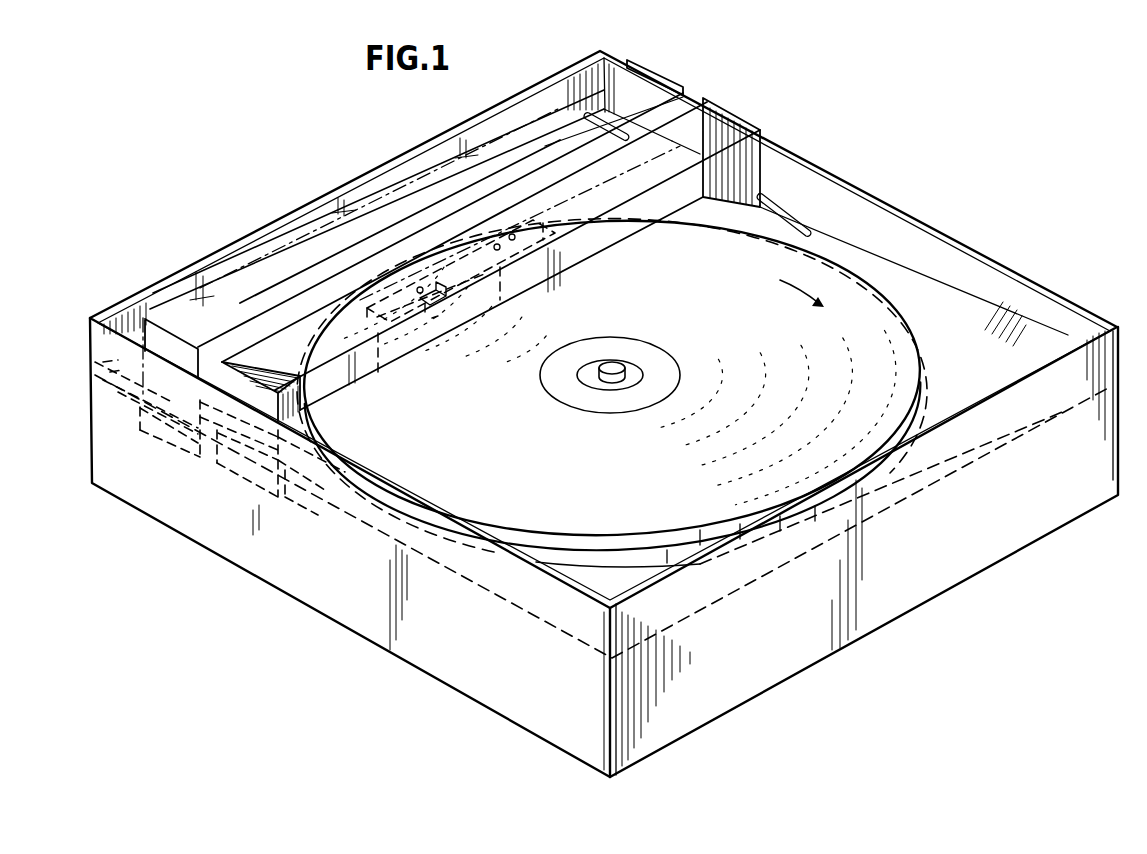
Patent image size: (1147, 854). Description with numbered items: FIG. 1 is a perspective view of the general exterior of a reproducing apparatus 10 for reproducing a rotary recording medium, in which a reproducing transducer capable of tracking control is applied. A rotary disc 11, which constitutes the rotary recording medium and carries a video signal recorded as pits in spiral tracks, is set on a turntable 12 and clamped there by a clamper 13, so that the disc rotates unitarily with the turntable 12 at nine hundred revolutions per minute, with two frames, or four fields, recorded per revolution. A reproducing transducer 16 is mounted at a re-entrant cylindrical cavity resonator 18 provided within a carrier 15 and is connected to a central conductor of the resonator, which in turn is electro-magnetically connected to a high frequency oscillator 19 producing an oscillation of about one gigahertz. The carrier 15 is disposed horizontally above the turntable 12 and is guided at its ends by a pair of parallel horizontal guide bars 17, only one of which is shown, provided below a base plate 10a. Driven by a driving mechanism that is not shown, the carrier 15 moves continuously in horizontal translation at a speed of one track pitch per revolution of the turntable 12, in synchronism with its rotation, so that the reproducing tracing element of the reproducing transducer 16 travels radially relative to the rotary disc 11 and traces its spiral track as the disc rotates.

The reproducing apparatus 10 is at (868, 141).
The base plate 10a is at (868, 262).
The rotary disc 11 is at (890, 348).
The turntable 12 is at (638, 557).
The clamper 13 is at (612, 392).
The carrier 15 is at (393, 192).
The reproducing transducer 16 is at (467, 316).
The guide bars 17 is at (291, 502).
The re-entrant cylindrical cavity resonator 18 is at (554, 278).
The high frequency oscillator 19 is at (356, 374).